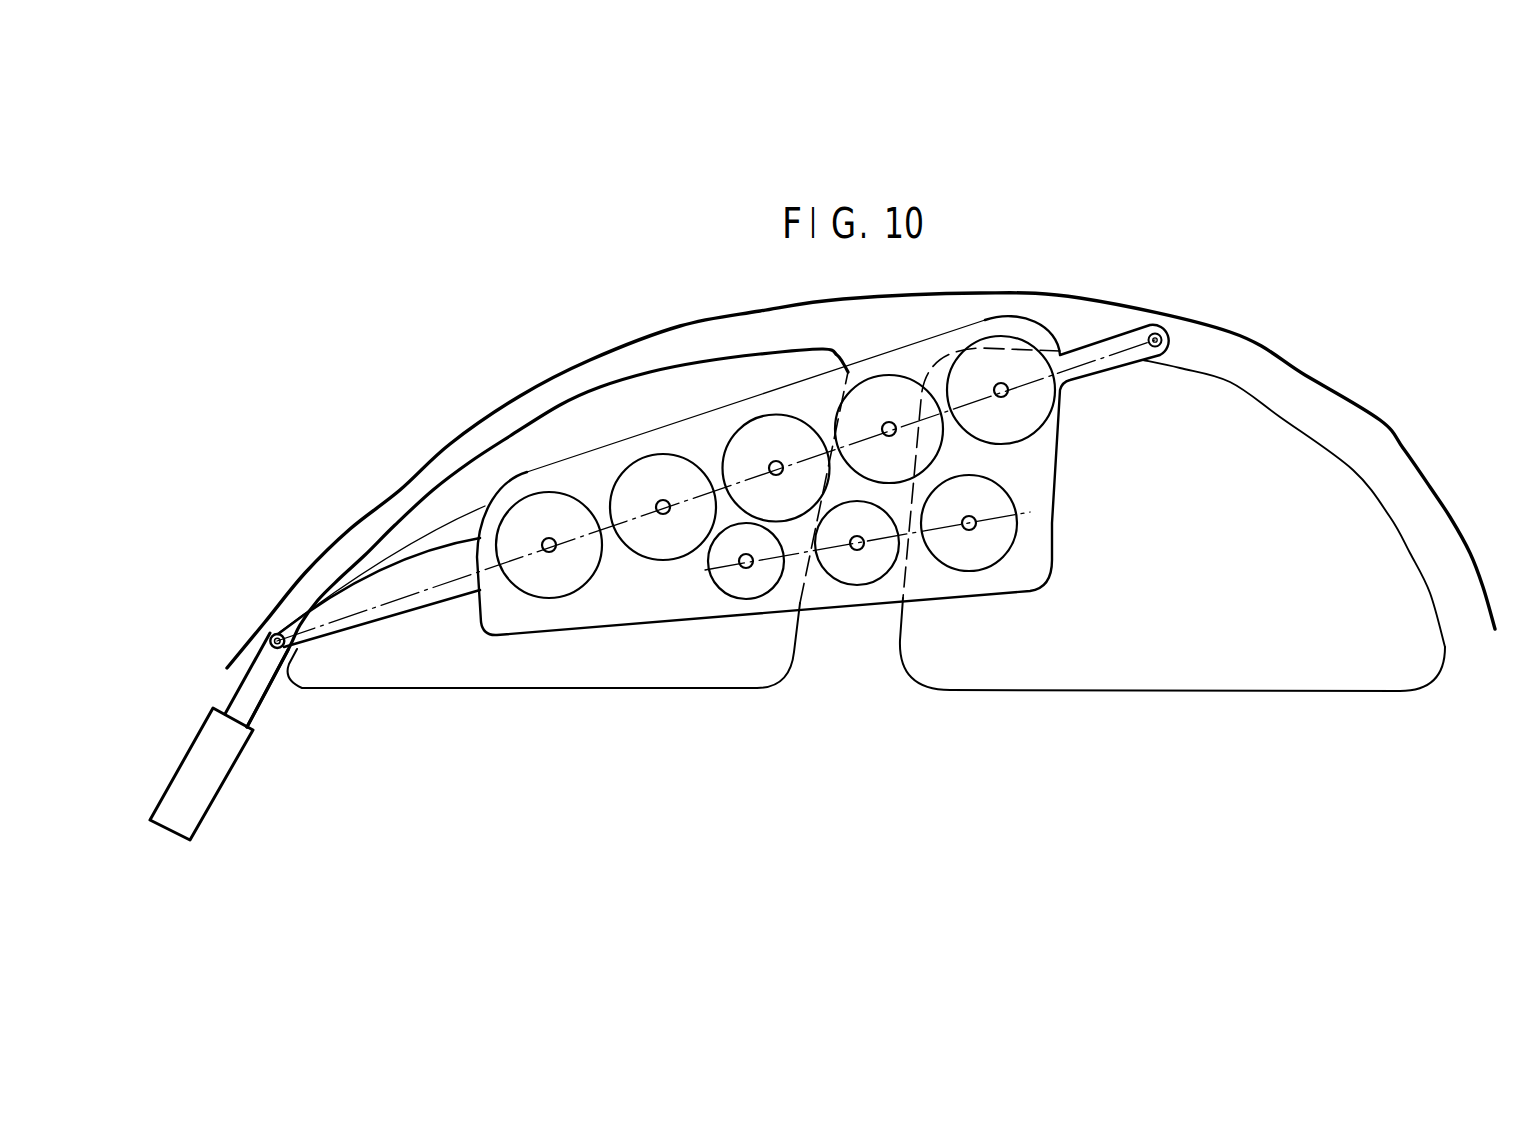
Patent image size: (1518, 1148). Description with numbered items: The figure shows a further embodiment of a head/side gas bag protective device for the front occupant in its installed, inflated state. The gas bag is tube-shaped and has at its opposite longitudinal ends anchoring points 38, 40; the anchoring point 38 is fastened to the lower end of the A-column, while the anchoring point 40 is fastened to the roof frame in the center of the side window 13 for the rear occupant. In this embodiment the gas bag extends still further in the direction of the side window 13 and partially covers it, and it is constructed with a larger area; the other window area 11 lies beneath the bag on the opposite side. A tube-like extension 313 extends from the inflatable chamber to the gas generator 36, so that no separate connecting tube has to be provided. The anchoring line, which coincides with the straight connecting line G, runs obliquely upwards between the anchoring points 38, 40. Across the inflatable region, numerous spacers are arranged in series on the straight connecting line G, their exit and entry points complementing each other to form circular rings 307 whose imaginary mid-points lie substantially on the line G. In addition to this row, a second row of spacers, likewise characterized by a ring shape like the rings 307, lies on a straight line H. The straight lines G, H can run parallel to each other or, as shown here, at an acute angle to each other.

The left chamber 11 is at (461, 668).
The side window 13 is at (1212, 665).
The gas generator 36 is at (208, 780).
The anchoring point 38 is at (272, 635).
The anchoring point 40 is at (1160, 334).
The circular ring 307 is at (660, 455).
The tube-like extension 313 is at (350, 573).
The straight connecting line G is at (580, 528).
The straight line H is at (1020, 516).